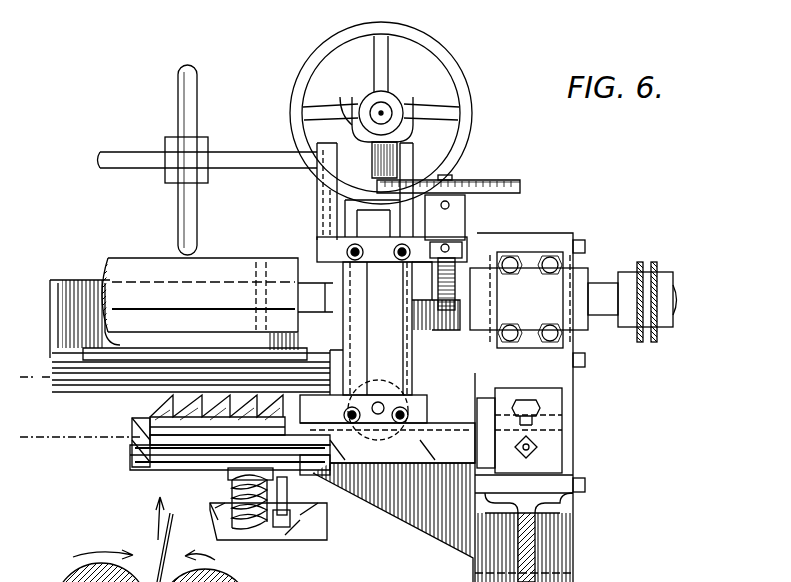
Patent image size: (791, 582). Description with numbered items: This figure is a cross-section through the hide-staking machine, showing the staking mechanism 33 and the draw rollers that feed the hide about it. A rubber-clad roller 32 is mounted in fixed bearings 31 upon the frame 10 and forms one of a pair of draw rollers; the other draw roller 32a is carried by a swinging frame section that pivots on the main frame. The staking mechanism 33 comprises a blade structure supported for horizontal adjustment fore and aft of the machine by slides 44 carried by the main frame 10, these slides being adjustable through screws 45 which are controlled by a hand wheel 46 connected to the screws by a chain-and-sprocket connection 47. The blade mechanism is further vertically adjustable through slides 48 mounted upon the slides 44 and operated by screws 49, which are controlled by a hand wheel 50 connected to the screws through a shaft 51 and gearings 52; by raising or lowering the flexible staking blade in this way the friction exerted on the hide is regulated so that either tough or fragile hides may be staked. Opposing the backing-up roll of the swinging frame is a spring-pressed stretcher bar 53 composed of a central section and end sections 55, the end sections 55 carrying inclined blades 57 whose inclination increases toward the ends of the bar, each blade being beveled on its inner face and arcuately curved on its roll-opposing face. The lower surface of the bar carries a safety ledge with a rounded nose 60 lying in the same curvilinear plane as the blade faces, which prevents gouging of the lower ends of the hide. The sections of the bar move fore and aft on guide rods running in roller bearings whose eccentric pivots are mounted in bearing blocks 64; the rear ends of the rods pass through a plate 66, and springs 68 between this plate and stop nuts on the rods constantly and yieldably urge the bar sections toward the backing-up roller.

The frame 10 is at (485, 538).
The fixed bearings 31 is at (548, 293).
The rubber-clad roller 32 is at (240, 268).
The draw roller 32a is at (60, 581).
The staking mechanism 33 is at (112, 357).
The slides 44 is at (440, 403).
The screws 45 is at (392, 440).
The hand wheel 46 is at (438, 52).
The chain-and-sprocket connection 47 is at (367, 93).
The slides 48 is at (450, 345).
The screws 49 is at (460, 262).
The hand wheel 50 is at (190, 85).
The shaft 51 is at (112, 157).
The gearings 52 is at (395, 163).
The spring-pressed stretcher bar 53 is at (147, 463).
The end sections 55 is at (153, 407).
The inclined blades 57 is at (150, 427).
The rounded nose 60 is at (135, 445).
The bearing blocks 64 is at (230, 473).
The plate 66 is at (300, 536).
The springs 68 is at (258, 495).